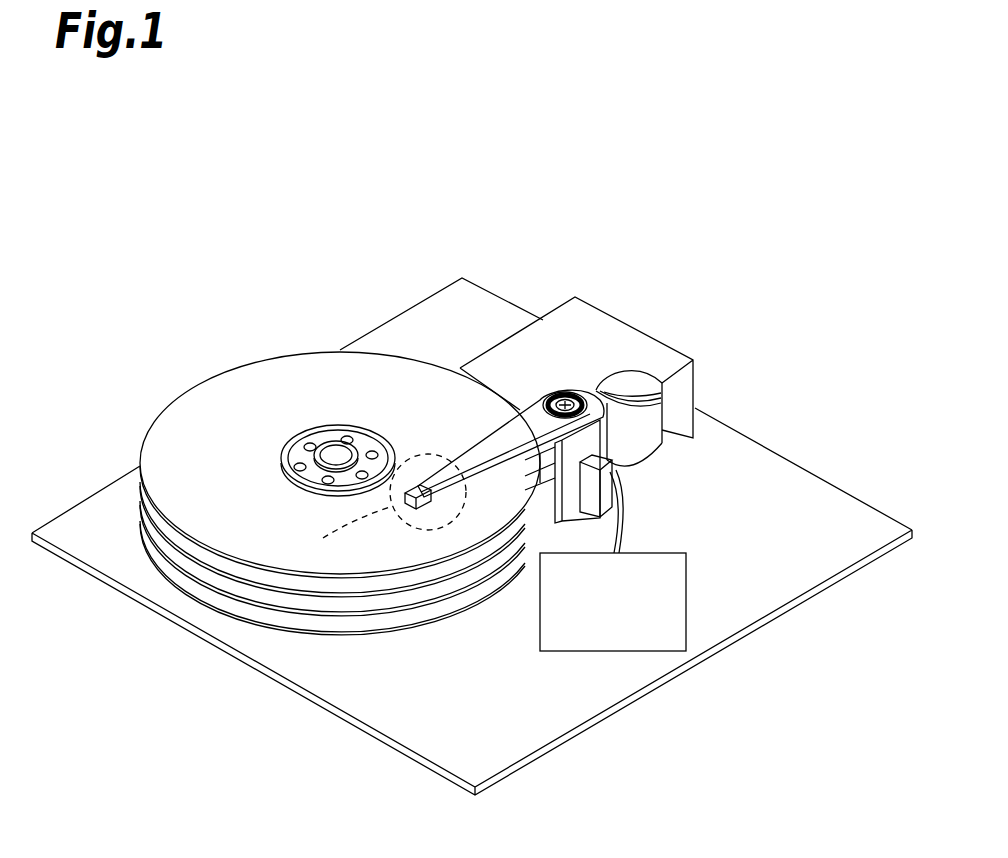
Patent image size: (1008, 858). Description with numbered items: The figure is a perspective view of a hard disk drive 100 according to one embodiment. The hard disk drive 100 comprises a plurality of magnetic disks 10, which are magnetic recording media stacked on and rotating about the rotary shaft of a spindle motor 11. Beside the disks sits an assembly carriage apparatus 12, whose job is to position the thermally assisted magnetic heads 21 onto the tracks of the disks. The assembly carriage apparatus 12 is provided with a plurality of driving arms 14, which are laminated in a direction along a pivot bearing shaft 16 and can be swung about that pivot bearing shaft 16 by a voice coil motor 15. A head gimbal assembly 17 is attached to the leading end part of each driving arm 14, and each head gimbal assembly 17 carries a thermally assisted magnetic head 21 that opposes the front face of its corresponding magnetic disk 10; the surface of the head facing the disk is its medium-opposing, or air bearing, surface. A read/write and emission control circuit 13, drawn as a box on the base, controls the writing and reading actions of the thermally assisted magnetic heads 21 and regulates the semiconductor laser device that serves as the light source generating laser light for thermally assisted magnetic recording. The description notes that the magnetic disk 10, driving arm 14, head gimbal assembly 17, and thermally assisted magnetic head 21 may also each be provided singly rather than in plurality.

The hard disk drive 100 is at (336, 193).
The magnetic disk 10 is at (239, 353).
The spindle motor 11 is at (330, 450).
The assembly carriage apparatus 12 is at (596, 324).
The read/write and emission control circuit 13 is at (643, 652).
The driving arm 14 is at (478, 458).
The voice coil motor 15 is at (637, 432).
The pivot bearing shaft 16 is at (566, 397).
The head gimbal assembly 17 is at (429, 485).
The thermally assisted magnetic head 21 is at (422, 514).